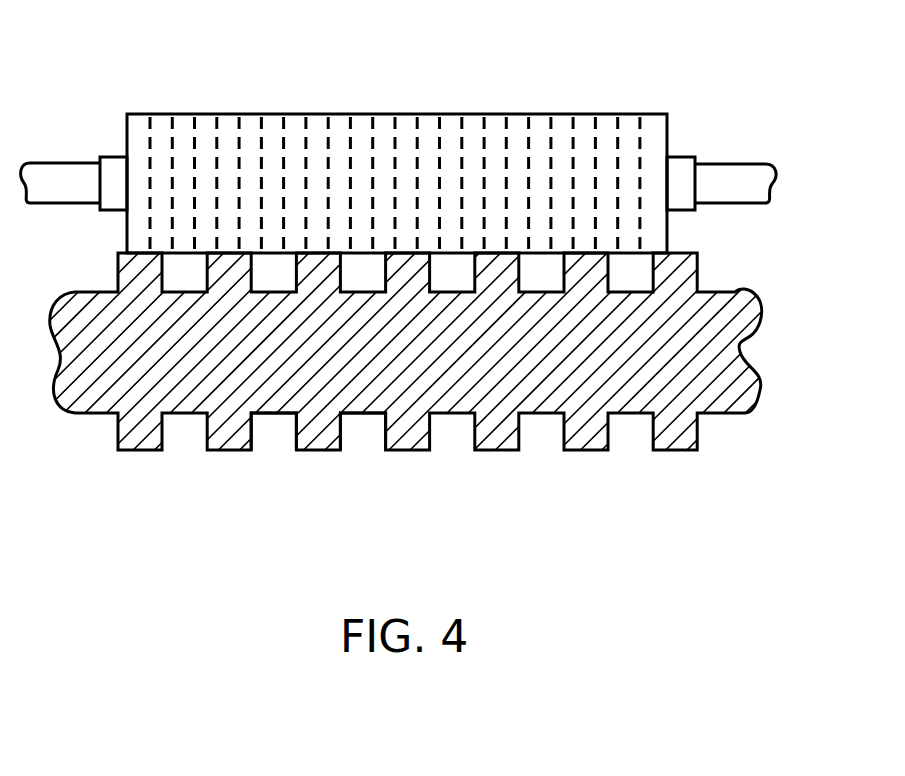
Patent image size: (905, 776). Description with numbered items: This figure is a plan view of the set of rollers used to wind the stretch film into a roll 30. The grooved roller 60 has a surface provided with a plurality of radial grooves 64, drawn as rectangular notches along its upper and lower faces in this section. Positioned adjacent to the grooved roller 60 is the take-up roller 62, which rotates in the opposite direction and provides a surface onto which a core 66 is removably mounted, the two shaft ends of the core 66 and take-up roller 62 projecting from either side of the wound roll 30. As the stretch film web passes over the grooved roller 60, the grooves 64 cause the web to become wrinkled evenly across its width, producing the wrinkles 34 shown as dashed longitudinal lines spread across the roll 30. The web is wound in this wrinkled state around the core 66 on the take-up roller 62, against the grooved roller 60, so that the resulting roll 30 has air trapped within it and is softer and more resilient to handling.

The roll of stretch film 30 is at (365, 135).
The wrinkles 34 is at (640, 114).
The grooved roller 60 is at (725, 378).
The take-up roller 62 is at (755, 167).
The radial grooves 64 is at (360, 438).
The core 66 is at (115, 163).